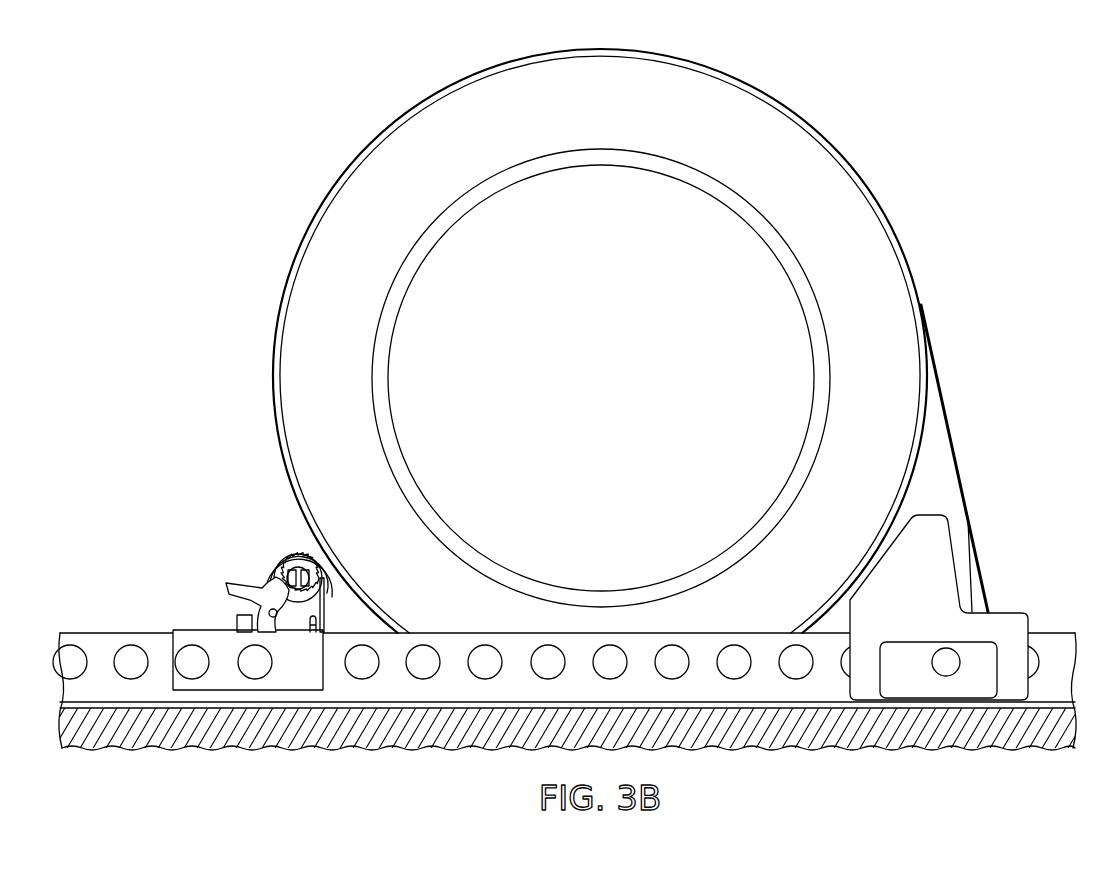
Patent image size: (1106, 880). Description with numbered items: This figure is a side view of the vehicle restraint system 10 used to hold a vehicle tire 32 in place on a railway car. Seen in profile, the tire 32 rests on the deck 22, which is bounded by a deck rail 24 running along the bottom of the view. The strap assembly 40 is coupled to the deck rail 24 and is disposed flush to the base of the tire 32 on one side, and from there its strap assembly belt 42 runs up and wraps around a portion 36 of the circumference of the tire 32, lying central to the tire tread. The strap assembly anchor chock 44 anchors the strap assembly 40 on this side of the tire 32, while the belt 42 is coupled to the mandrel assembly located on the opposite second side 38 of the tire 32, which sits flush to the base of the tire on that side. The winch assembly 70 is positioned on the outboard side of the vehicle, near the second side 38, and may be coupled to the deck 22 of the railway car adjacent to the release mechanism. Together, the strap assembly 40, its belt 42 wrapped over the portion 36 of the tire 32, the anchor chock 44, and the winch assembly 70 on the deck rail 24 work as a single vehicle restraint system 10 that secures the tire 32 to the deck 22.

The vehicle restraint system 10 is at (250, 599).
The deck 22 is at (515, 702).
The deck rail 24 is at (450, 637).
The tire 32 is at (568, 78).
The portion of tire 36 is at (350, 167).
The second side of tire 38 is at (347, 613).
The strap assembly 40 is at (1004, 516).
The strap assembly belt 42 is at (947, 412).
The strap assembly anchor chock 44 is at (946, 576).
The winch assembly 70 is at (296, 612).